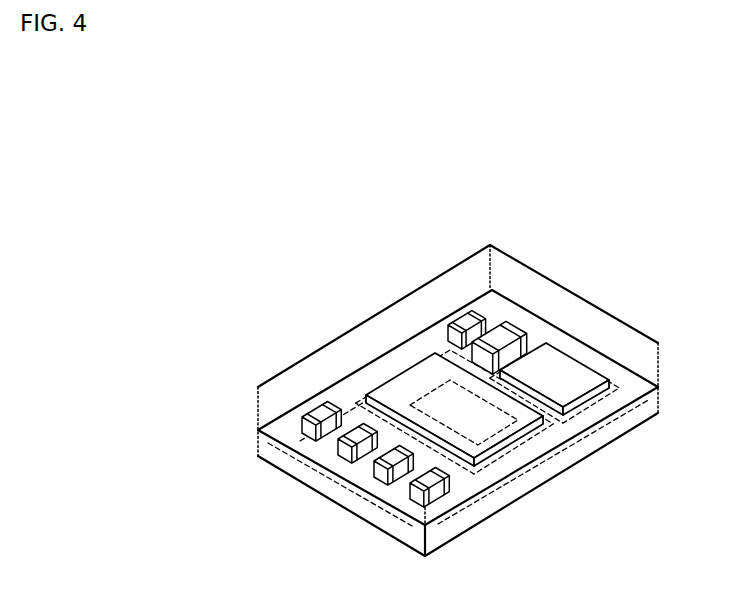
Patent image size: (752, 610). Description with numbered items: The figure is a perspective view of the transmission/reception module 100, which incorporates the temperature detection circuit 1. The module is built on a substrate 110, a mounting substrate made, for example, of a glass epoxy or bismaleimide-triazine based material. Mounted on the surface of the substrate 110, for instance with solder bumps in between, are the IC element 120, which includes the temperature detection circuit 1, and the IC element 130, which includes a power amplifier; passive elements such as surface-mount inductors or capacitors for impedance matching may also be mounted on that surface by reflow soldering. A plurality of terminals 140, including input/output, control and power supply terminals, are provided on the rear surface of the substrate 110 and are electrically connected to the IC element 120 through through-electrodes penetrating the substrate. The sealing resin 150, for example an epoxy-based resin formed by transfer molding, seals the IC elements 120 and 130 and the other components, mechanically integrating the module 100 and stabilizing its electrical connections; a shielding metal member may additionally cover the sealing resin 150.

The transmission/reception module 100 is at (672, 247).
The substrate 110 is at (547, 465).
The IC element 120 is at (405, 382).
The IC element 130 is at (562, 373).
The terminals 140 is at (397, 518).
The sealing resin 150 is at (260, 412).
The temperature detection circuit 1 is at (478, 420).